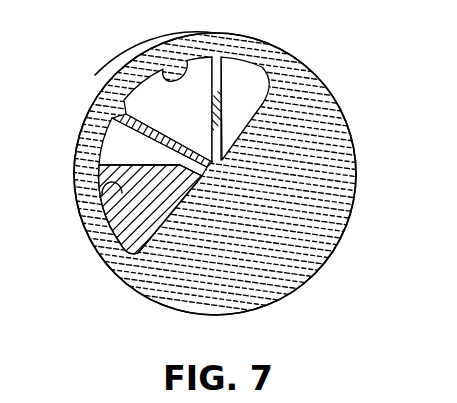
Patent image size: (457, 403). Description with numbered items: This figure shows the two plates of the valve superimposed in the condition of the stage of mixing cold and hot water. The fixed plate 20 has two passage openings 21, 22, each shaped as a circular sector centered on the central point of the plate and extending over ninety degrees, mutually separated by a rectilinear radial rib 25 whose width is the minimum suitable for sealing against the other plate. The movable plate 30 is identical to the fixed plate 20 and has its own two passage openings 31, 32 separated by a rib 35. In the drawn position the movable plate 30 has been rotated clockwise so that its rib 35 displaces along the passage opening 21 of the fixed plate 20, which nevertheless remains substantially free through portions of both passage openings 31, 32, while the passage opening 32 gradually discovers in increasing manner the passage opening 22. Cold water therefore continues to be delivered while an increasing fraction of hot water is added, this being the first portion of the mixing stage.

The fixed plate 20 is at (103, 257).
The passage opening 21 is at (158, 104).
The passage opening 22 is at (258, 90).
The rib 25 is at (224, 77).
The movable plate 30 is at (323, 236).
The passage opening 31 is at (130, 229).
The passage opening 32 is at (145, 54).
The rib 35 is at (138, 137).